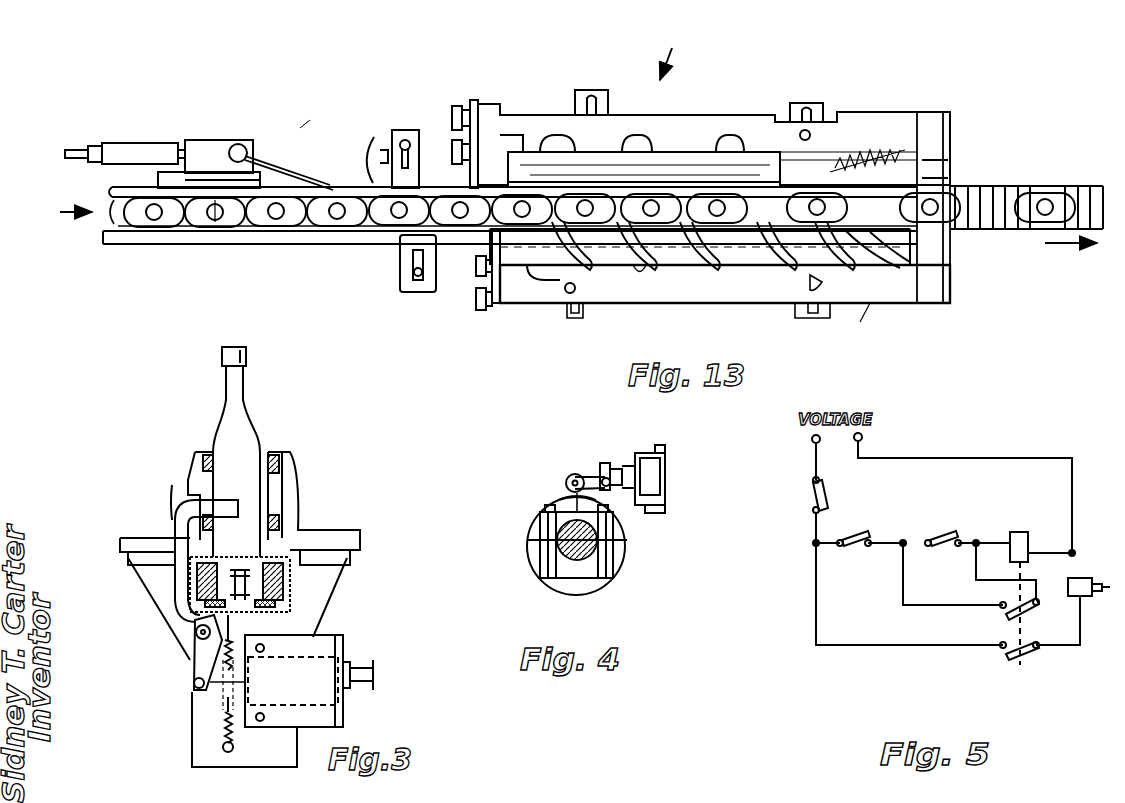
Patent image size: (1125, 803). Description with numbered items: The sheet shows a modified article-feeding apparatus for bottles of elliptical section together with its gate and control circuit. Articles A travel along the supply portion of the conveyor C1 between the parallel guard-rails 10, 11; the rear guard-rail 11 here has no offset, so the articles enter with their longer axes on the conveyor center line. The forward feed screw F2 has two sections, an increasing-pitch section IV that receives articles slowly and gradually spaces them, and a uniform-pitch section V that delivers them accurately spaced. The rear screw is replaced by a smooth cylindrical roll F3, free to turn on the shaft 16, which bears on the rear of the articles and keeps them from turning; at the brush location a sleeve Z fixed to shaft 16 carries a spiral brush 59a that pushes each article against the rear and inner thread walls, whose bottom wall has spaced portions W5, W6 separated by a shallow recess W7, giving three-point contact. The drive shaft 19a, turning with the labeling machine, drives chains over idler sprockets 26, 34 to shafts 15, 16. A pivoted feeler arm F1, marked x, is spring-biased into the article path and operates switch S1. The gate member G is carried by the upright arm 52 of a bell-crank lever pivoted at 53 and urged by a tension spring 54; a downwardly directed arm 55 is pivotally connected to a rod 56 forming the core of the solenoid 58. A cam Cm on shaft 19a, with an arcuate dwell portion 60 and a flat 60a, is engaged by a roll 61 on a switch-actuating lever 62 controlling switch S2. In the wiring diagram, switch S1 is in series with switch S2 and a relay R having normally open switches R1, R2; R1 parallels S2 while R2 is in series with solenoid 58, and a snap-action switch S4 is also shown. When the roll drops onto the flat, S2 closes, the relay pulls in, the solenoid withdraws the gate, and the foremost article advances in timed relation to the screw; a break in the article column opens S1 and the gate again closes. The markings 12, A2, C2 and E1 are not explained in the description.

In FIG. 13, the guard-rail 10 is at (362, 243).
In FIG. 3, the guard-rail 10 is at (290, 520).
In FIG. 13, the rear guard-rail 11 is at (340, 186).
In FIG. 3, the rear guard-rail 11 is at (195, 488).
In FIG. 13, the mounting bracket 12 is at (596, 102).
In FIG. 13, the shaft 15 is at (462, 270).
In FIG. 13, the shaft 16 is at (450, 160).
In FIG. 13, the idler sprocket 26 is at (462, 112).
In FIG. 13, the idler sprocket 34 is at (485, 308).
In FIG. 3, the upright arm 52 is at (180, 565).
In FIG. 3, the pivot 53 is at (198, 634).
In FIG. 3, the tension spring 54 is at (235, 642).
In FIG. 3, the downwardly directed arm 55 is at (198, 668).
In FIG. 3, the rod 56 is at (220, 700).
In FIG. 3, the solenoid 58 is at (350, 640).
In FIG. 5, the solenoid 58 is at (1082, 578).
In FIG. 13, the spiral brush 59a is at (893, 150).
In FIG. 4, the arcuate dwell portion 60 is at (535, 570).
In FIG. 4, the flat active portion 60a is at (562, 498).
In FIG. 4, the roll 61 is at (570, 474).
In FIG. 4, the switch-actuating lever 62 is at (600, 466).
In FIG. 4, the drive shaft 19a is at (568, 560).
In FIG. 3, the article A is at (245, 432).
In FIG. 13, the article A2 is at (200, 225).
In FIG. 13, the supply portion of the conveyor C1 is at (130, 240).
In FIG. 3, the supply portion of the conveyor C1 is at (240, 557).
In FIG. 13, the second conveyor C2 is at (1000, 186).
In FIG. 4, the cam Cm is at (542, 505).
In FIG. 13, the feed direction E1 is at (684, 50).
In FIG. 13, the feeler arm F1 is at (310, 118).
In FIG. 13, the feed screw F2 is at (568, 230).
In FIG. 13, the smooth cylindrical roll F3 is at (590, 160).
In FIG. 13, the gate member G is at (372, 160).
In FIG. 3, the gate member G is at (225, 500).
In FIG. 13, the screw section IV is at (720, 266).
In FIG. 13, the screw section V is at (820, 305).
In FIG. 5, the relay R is at (1020, 528).
In FIG. 5, the relay switch R1 is at (1000, 615).
In FIG. 5, the relay switch R2 is at (1005, 665).
In FIG. 13, the switch S1 is at (230, 130).
In FIG. 5, the switch S1 is at (855, 522).
In FIG. 4, the switch S2 is at (668, 470).
In FIG. 5, the switch S2 is at (940, 522).
In FIG. 5, the snap-action switch S4 is at (805, 498).
In FIG. 13, the bottom wall portion W5 is at (865, 275).
In FIG. 13, the bottom wall portion W6 is at (920, 285).
In FIG. 13, the shallow recess W7 is at (885, 275).
In FIG. 13, the sleeve Z is at (793, 165).
In FIG. 13, the pivot x is at (308, 117).